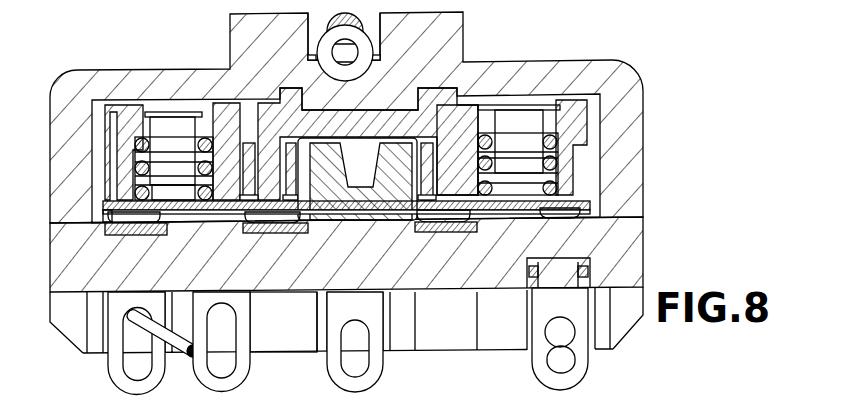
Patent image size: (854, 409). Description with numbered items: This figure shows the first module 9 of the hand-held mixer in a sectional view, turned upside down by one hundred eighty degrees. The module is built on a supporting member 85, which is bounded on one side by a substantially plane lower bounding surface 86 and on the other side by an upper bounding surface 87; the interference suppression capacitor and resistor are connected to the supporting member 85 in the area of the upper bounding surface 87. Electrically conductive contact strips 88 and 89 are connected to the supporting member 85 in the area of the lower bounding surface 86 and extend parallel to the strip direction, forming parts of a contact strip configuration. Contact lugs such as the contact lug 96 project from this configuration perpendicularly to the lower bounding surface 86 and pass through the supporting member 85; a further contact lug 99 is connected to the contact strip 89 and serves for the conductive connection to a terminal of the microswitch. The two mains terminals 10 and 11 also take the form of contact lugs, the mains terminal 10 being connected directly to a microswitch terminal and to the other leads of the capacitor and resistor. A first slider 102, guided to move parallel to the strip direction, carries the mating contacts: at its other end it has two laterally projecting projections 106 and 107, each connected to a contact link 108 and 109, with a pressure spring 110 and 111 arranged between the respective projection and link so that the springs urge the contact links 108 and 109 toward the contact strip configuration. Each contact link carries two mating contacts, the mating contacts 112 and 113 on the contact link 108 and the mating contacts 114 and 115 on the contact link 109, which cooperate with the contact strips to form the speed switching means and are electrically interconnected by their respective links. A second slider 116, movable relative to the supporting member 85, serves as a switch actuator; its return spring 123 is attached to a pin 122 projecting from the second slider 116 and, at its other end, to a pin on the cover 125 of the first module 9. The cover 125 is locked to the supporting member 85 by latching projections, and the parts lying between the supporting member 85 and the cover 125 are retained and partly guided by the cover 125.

The first module 9 is at (694, 133).
The mains terminal 10 is at (117, 370).
The mains terminal 11 is at (243, 368).
The supporting member 85 is at (628, 250).
The lower bounding surface 86 is at (585, 200).
The upper bounding surface 87 is at (432, 222).
The contact strip 88 is at (250, 234).
The contact strip 89 is at (462, 222).
The contact lug 96 is at (570, 378).
The contact lug 99 is at (338, 372).
The first slider 102 is at (380, 120).
The projection 106 is at (185, 196).
The projection 107 is at (477, 118).
The contact link 108 is at (167, 168).
The contact link 109 is at (525, 192).
The pressure spring 110 is at (150, 105).
The pressure spring 111 is at (523, 142).
The mating contact 112 is at (76, 322).
The mating contact 113 is at (272, 234).
The mating contact 114 is at (445, 222).
The mating contact 115 is at (505, 320).
The second slider 116 is at (337, 202).
The pin 122 is at (240, 20).
The return spring 123 is at (365, 27).
The cover 125 is at (610, 100).